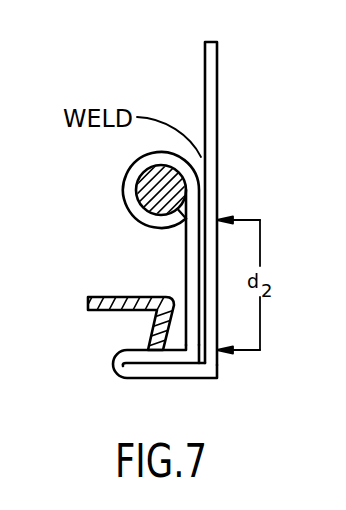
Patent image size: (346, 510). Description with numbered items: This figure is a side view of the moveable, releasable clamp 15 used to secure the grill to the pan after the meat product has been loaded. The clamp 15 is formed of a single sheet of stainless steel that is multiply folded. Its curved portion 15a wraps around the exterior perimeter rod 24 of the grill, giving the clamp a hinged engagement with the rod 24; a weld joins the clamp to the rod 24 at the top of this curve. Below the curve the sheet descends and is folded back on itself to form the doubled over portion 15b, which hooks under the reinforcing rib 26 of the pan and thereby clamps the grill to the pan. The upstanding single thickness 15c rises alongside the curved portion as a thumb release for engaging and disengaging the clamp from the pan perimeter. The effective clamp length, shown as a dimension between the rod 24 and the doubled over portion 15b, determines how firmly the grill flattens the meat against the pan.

The moveable clamp 15 is at (260, 201).
The curved hinge portion of clamp 15a is at (123, 205).
The doubled over portion 15b is at (160, 380).
The upstanding single thickness 15c is at (218, 73).
The perimeter rod 24 is at (152, 180).
The reinforcing rib 26 is at (88, 303).